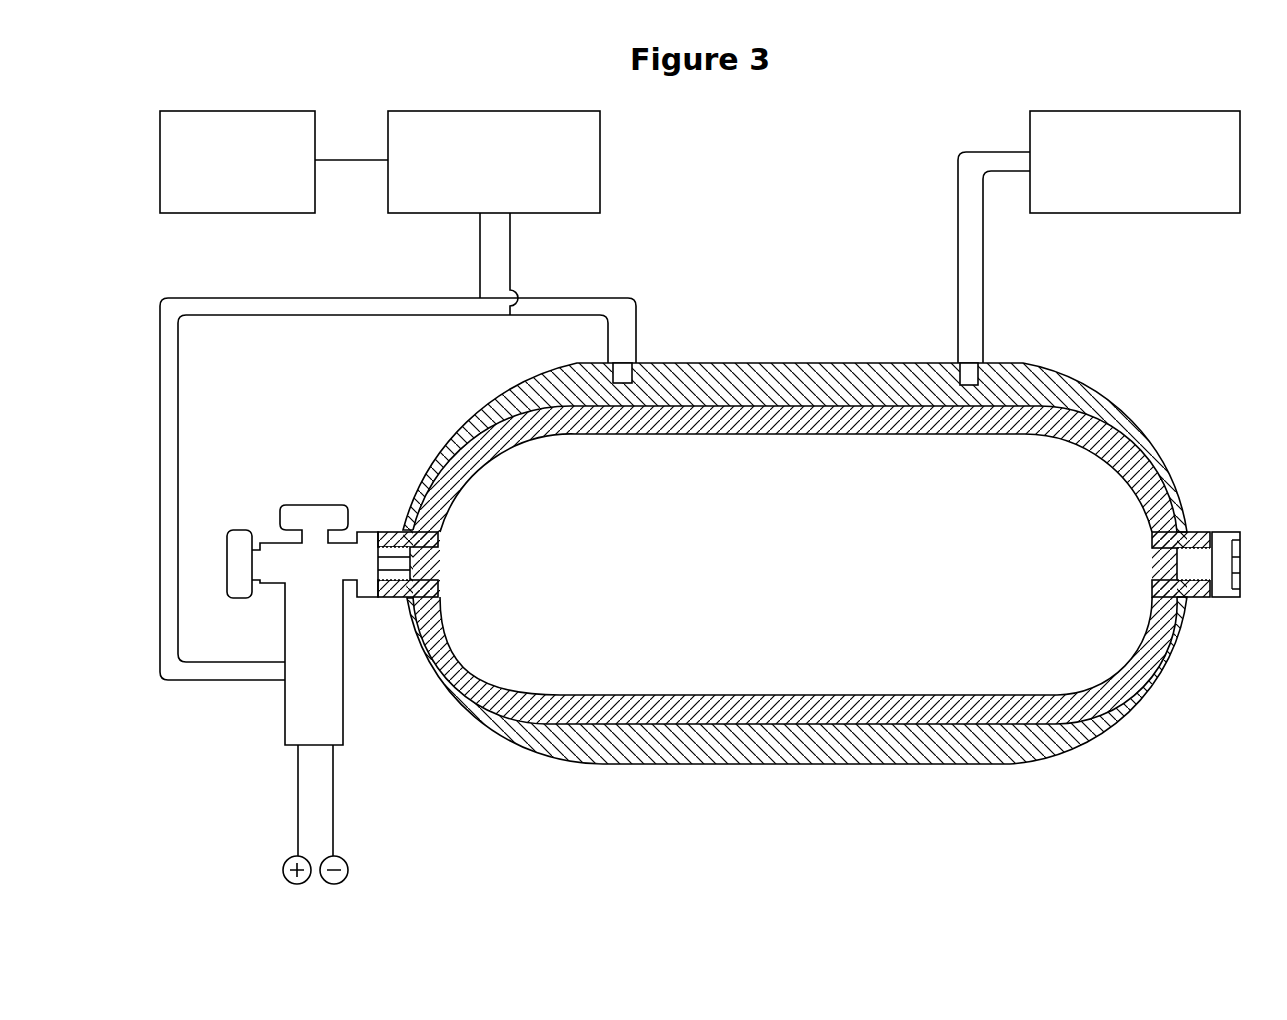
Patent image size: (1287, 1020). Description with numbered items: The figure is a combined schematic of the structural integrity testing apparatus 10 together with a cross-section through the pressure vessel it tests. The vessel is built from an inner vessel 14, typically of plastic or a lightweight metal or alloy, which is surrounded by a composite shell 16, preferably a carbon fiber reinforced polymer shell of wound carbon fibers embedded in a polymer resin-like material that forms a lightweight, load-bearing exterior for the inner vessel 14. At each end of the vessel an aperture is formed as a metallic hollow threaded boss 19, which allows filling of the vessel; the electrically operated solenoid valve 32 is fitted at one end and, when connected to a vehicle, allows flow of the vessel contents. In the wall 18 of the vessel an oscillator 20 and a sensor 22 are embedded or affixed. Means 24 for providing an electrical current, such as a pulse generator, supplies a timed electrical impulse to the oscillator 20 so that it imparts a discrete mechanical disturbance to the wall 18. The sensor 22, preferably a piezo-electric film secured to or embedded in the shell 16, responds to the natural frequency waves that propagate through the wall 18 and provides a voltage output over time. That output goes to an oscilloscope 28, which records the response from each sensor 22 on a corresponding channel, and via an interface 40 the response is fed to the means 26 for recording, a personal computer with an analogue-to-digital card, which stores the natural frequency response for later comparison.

The apparatus 10 is at (809, 563).
The inner vessel 14 is at (795, 435).
The composite shell 16 is at (794, 386).
The wall 18 is at (780, 750).
The threaded boss 19 is at (448, 520).
The oscillator 20 is at (984, 364).
The sensor 22 is at (636, 366).
The means for providing an electrical current 24 is at (1125, 175).
The means for recording 26 is at (224, 175).
The oscilloscope 28 is at (481, 175).
The solenoid valve 32 is at (322, 695).
The interface 40 is at (349, 158).